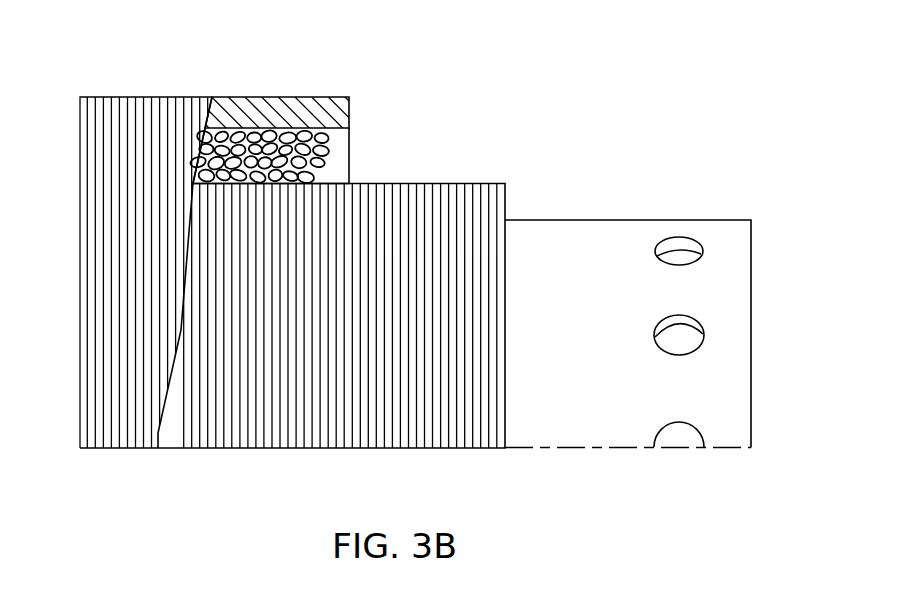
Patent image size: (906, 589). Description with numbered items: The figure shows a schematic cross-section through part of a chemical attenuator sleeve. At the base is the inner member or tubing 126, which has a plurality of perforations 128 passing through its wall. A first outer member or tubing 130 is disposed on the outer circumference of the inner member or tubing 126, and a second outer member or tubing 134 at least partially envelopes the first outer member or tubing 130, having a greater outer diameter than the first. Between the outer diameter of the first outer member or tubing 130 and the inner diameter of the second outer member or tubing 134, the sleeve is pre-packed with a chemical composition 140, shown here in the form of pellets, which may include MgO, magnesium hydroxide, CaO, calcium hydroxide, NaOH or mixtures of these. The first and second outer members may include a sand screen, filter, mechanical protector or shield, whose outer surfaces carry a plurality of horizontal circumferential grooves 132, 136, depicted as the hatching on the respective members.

The inner member or tubing 126 is at (575, 219).
The perforations 128 is at (682, 343).
The first outer member or tubing 130 is at (498, 183).
The horizontal circumferential grooves 132 is at (447, 183).
The second outer member or tubing 134 is at (338, 96).
The horizontal circumferential grooves 136 is at (172, 96).
The chemical composition 140 is at (323, 148).